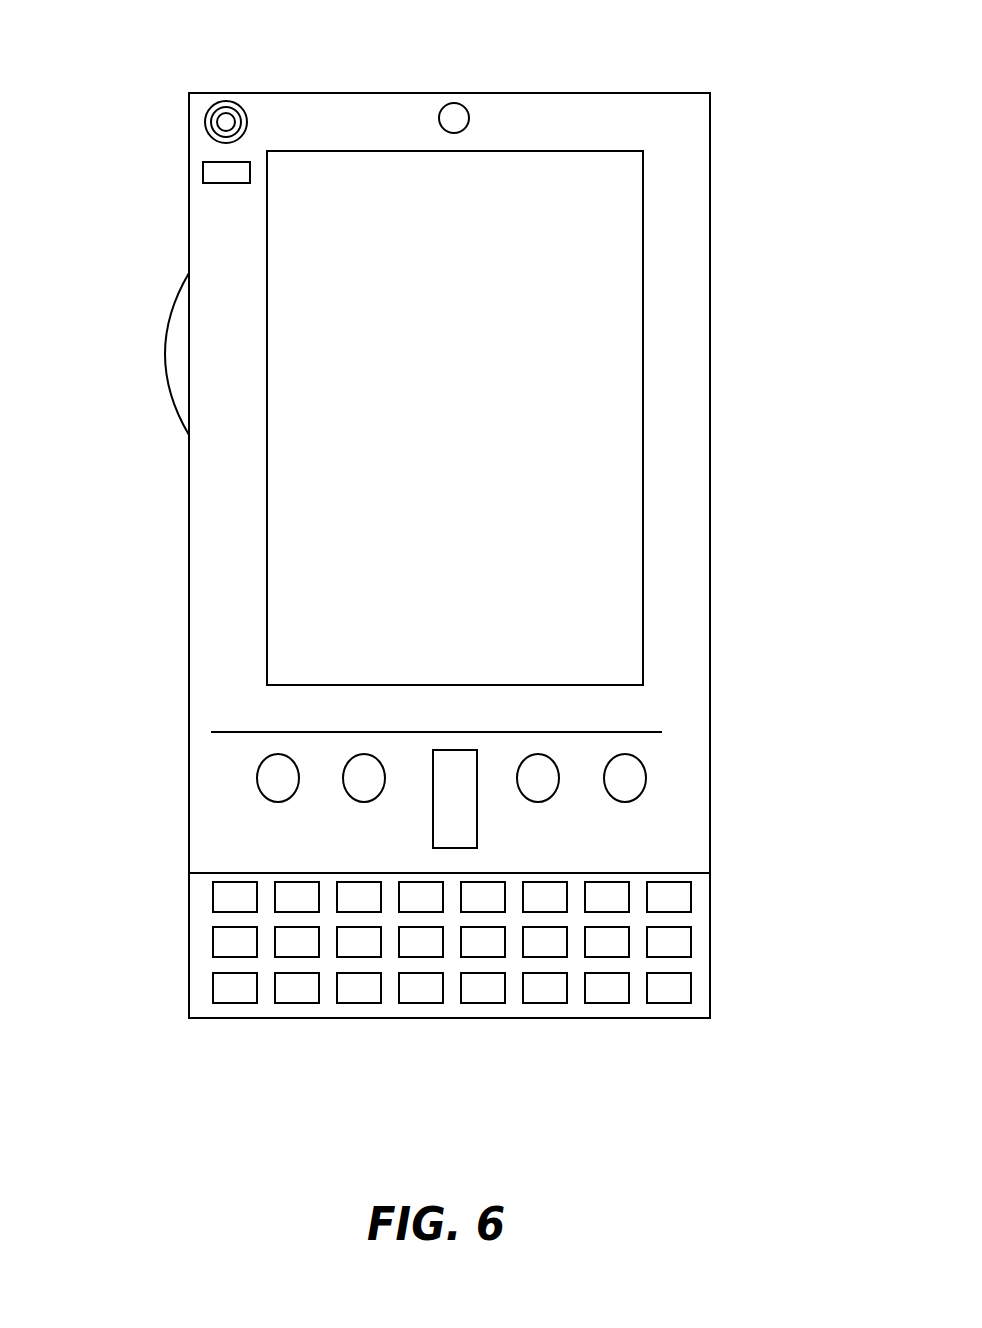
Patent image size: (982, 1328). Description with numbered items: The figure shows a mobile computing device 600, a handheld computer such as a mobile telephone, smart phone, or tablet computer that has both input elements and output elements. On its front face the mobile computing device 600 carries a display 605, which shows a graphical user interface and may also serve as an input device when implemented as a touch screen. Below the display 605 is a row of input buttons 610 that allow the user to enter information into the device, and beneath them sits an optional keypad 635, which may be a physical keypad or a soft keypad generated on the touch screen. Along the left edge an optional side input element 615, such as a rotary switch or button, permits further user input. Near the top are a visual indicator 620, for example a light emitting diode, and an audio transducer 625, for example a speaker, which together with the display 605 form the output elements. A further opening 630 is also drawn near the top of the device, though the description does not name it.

The mobile computing device 600 is at (697, 112).
The display 605 is at (383, 594).
The input buttons 610 is at (454, 805).
The side input element 615 is at (180, 355).
The visual indicator 620 is at (205, 176).
The audio transducer 625 is at (205, 120).
The speaker 630 is at (467, 118).
The keypad 635 is at (198, 994).